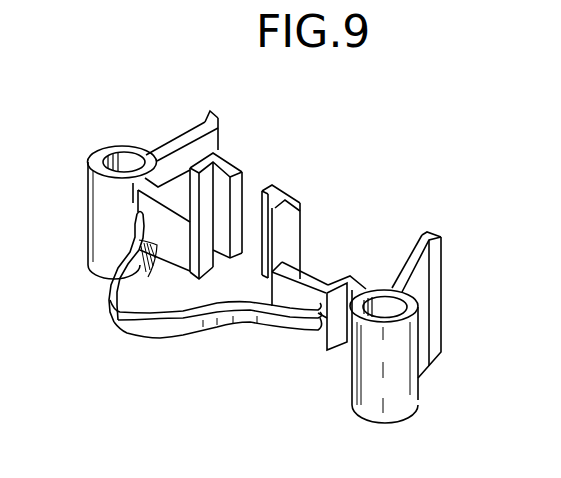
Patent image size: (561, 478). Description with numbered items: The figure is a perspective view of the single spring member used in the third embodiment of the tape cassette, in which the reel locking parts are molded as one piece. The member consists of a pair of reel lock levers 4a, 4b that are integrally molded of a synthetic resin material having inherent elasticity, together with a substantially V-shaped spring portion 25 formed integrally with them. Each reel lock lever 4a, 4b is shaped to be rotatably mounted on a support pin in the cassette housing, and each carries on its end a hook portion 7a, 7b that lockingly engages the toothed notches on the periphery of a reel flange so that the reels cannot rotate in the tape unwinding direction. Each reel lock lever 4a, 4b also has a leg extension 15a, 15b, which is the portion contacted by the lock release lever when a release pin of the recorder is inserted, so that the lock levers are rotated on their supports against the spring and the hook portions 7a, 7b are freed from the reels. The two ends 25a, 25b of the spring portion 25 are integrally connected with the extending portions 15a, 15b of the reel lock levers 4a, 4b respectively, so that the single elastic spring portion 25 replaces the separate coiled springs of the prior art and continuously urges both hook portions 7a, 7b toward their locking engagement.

The reel lock lever 4a is at (180, 138).
The reel lock lever 4b is at (423, 286).
The hook portion 7a is at (211, 111).
The hook portion 7b is at (428, 233).
The leg extension 15a is at (242, 187).
The leg extension 15b is at (280, 190).
The V-shaped spring portion 25 is at (132, 325).
The end of spring portion 25a is at (135, 222).
The end of spring portion 25b is at (324, 328).